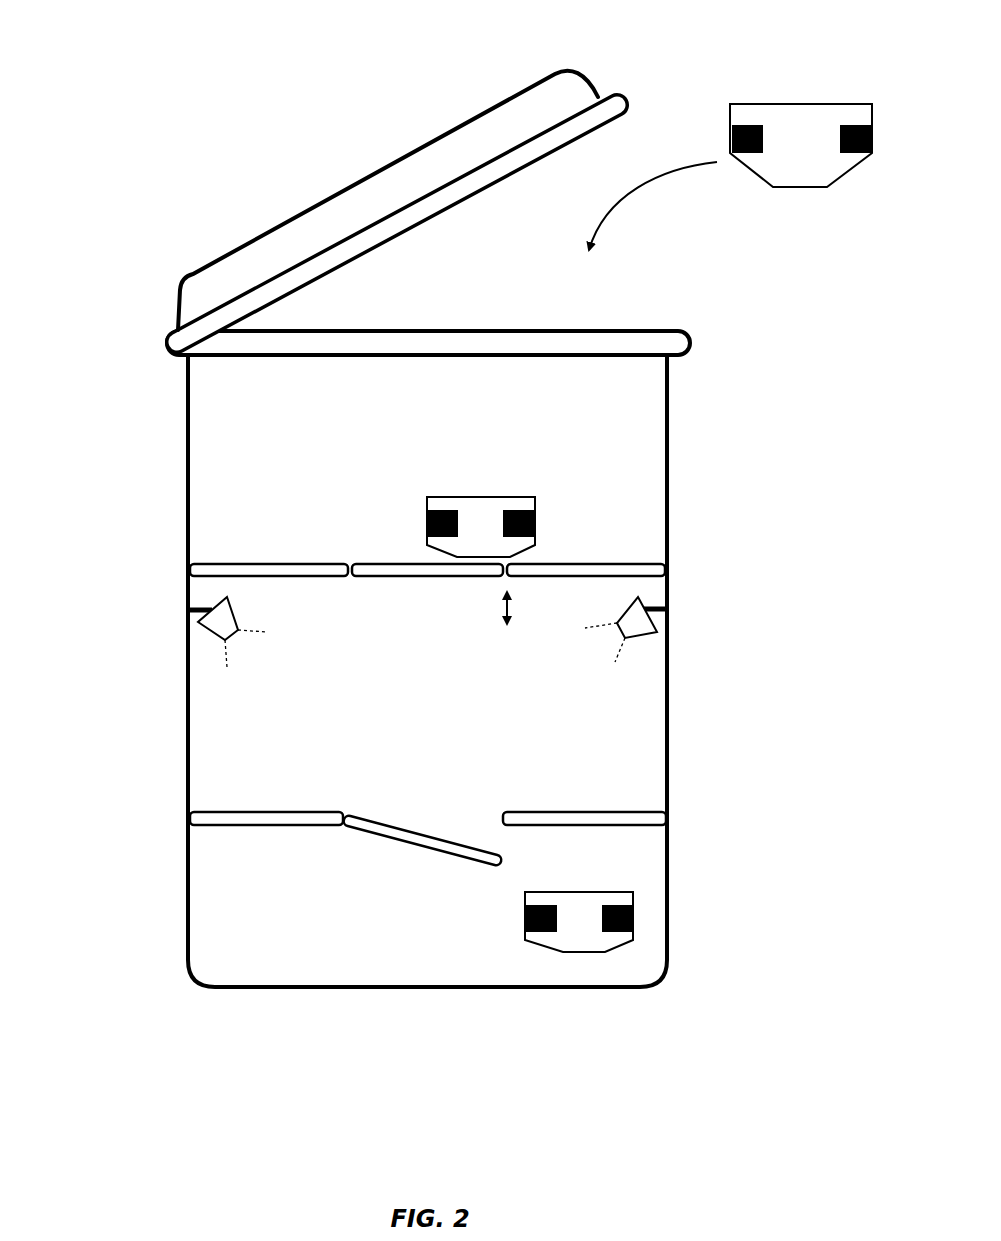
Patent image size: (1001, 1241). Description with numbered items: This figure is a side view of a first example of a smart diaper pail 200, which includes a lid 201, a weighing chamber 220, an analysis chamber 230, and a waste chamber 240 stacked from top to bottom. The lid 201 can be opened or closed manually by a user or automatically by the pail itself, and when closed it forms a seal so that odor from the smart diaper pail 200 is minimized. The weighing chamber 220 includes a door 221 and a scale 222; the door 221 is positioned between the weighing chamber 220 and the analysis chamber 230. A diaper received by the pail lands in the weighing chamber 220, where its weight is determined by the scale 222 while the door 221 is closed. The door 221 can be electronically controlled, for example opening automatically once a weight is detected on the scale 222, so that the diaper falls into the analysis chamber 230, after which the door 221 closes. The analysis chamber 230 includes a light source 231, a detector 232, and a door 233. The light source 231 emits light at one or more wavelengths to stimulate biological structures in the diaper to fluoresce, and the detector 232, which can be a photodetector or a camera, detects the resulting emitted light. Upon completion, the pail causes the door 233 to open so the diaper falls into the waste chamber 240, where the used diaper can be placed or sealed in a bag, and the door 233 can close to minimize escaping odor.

The smart diaper pail 200 is at (45, 34).
The lid 201 is at (452, 115).
The weighing chamber 220 is at (338, 424).
The door 221 is at (400, 548).
The scale 222 is at (543, 557).
The analysis chamber 230 is at (428, 676).
The light source 231 is at (200, 640).
The detector 232 is at (646, 648).
The door 233 is at (400, 790).
The waste chamber 240 is at (328, 944).